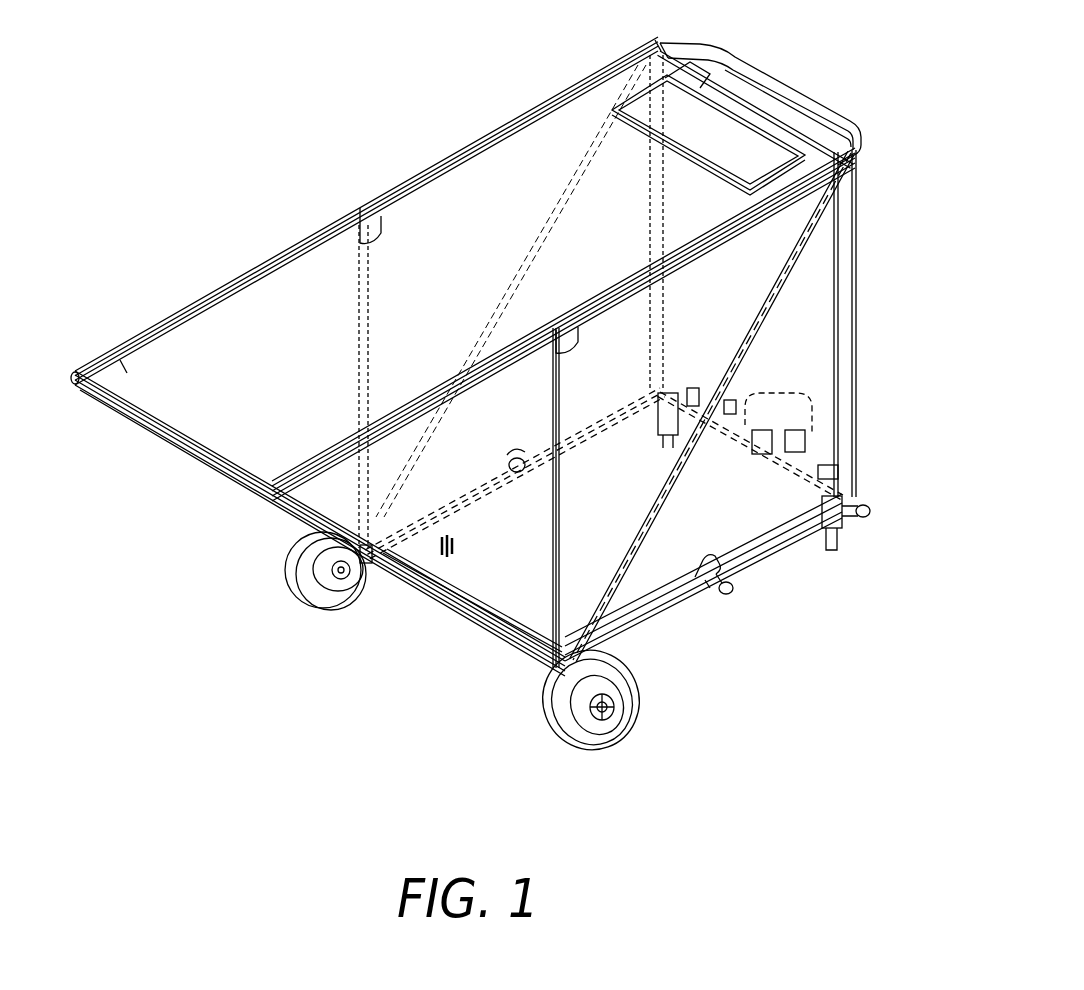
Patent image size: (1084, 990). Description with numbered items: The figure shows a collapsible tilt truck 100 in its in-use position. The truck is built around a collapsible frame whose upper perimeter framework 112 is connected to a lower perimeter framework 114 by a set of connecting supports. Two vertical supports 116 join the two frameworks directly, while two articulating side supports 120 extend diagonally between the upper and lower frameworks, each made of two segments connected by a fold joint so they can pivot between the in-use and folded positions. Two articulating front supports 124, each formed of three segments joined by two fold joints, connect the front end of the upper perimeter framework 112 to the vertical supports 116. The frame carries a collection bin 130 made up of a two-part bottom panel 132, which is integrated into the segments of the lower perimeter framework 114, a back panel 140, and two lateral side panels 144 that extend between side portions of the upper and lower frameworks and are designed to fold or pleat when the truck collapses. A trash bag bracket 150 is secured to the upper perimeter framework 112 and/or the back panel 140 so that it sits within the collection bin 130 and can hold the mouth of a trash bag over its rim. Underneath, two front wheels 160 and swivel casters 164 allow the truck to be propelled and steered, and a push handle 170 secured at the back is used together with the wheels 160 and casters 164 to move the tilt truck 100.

The tilt truck 100 is at (210, 297).
The upper perimeter framework 112 is at (120, 363).
The lower perimeter framework 114 is at (743, 563).
The vertical supports 116 is at (359, 333).
The articulating side supports 120 is at (563, 203).
The articulating front supports 124 is at (333, 441).
The collection bin 130 is at (407, 184).
The two-part bottom panel 132 is at (653, 590).
The back panel 140 is at (845, 297).
The lateral side panels 144 is at (807, 350).
The trash bag bracket 150 is at (690, 153).
The wheels 160 is at (297, 590).
The swivel casters 164 is at (840, 537).
The push handle 170 is at (793, 82).